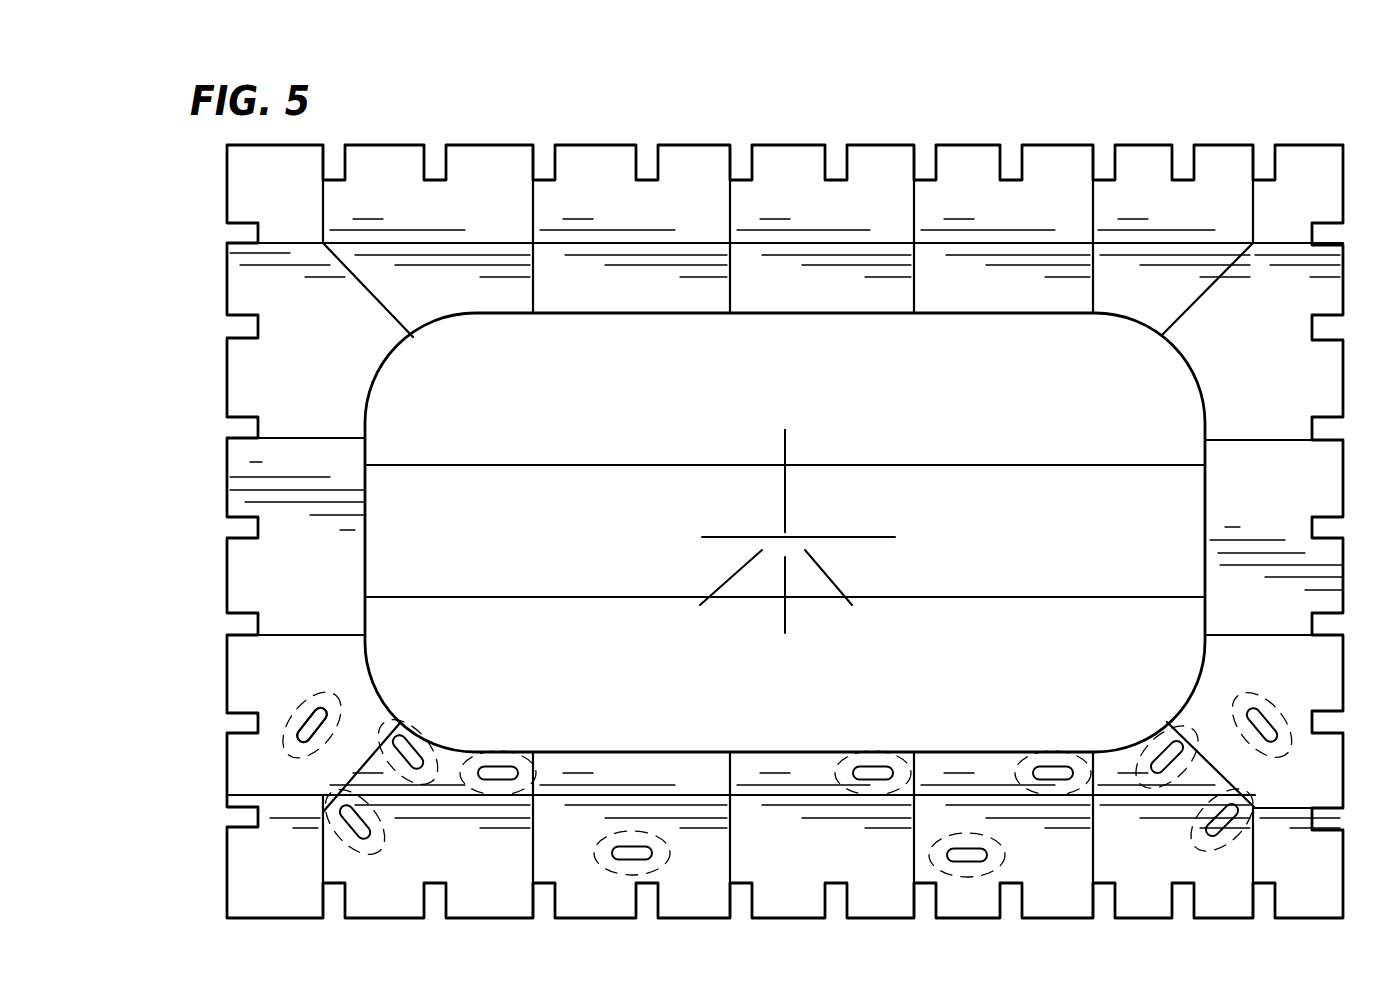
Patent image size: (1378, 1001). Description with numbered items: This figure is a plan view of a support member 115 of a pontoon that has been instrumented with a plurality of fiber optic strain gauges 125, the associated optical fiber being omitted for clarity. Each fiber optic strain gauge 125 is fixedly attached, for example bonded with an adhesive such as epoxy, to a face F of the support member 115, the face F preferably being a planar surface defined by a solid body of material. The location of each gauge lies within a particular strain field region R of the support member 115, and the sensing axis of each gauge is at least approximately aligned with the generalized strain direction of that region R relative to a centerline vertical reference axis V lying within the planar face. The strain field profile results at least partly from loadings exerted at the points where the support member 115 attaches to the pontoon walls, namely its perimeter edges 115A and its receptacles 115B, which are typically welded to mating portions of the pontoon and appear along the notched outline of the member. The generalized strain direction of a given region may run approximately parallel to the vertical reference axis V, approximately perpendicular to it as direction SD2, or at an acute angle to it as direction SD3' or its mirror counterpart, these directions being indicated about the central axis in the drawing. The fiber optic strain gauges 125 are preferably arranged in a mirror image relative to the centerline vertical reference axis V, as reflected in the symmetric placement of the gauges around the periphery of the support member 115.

The support member 115 is at (750, 108).
The perimeter edges 115A is at (598, 145).
The receptacles 115B is at (535, 167).
The fiber optic strain gauges 125 is at (308, 722).
The strain field region R is at (313, 698).
The face F is at (296, 340).
The centerline vertical reference axis V is at (786, 496).
The generalized strain direction perpendicular to the vertical reference axis SD2 is at (858, 537).
The generalized strain direction at an acute angle to the vertical reference axis SD3' is at (692, 577).